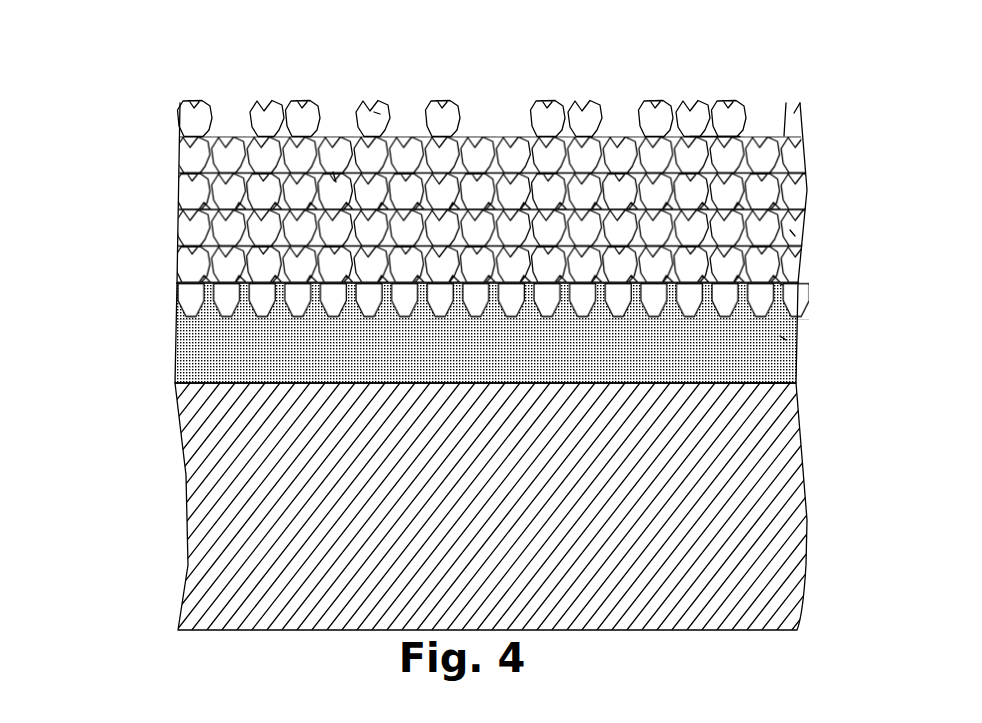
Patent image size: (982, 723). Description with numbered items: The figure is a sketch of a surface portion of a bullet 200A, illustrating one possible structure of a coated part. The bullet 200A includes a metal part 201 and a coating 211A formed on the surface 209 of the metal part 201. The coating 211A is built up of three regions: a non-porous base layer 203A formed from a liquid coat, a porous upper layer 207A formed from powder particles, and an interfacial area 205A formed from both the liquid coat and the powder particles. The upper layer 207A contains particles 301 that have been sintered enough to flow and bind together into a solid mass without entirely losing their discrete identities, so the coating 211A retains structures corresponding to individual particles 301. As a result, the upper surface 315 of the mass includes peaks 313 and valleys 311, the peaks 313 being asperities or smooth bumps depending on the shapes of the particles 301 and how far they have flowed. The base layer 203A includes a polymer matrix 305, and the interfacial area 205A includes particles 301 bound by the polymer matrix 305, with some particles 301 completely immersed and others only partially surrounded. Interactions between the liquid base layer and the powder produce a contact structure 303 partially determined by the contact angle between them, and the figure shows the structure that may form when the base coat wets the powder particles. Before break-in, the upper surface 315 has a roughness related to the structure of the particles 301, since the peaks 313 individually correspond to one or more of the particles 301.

The bullet 200A is at (189, 56).
The metal part 201 is at (803, 444).
The non-porous base layer 203A is at (166, 322).
The interfacial area 205A is at (166, 284).
The porous upper layer 207A is at (166, 105).
The surface 209 is at (766, 372).
The coating 211A is at (89, 105).
The particles 301 is at (800, 230).
The contact structure 303 is at (785, 282).
The polymer matrix 305 is at (785, 335).
The valleys 311 is at (333, 172).
The peaks 313 is at (378, 108).
The upper surface 315 is at (720, 80).